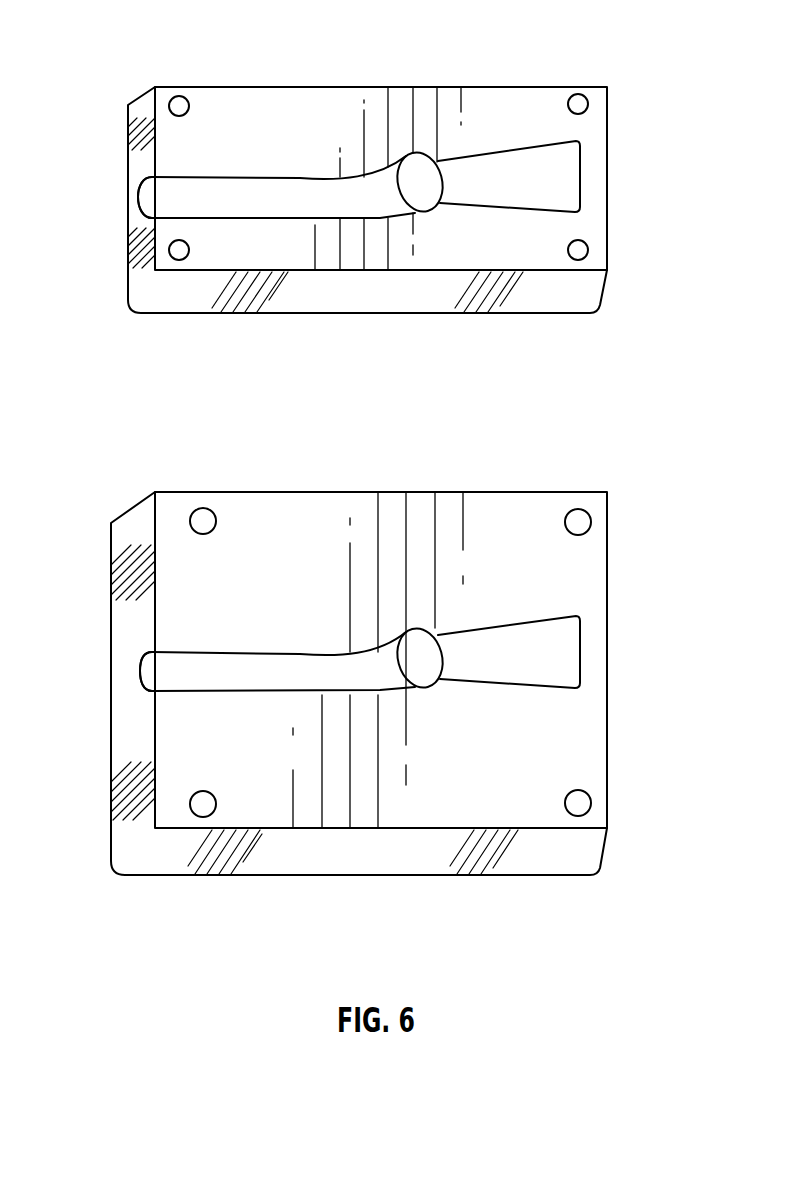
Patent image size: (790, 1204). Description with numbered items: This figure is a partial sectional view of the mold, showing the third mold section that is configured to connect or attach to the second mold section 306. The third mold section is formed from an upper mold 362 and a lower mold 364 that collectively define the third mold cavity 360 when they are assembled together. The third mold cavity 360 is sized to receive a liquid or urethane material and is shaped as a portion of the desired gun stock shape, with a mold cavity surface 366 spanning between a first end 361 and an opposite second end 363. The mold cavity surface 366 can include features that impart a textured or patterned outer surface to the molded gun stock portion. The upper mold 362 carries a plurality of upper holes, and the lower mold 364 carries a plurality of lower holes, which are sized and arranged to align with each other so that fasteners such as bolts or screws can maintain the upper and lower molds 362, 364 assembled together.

The second mold section 306 is at (594, 260).
The third mold cavity 360 is at (181, 97).
The first end 361 is at (146, 184).
The upper mold 362 is at (595, 222).
The second end 363 is at (575, 170).
The lower mold 364 is at (593, 687).
The mold cavity surface 366 is at (237, 207).